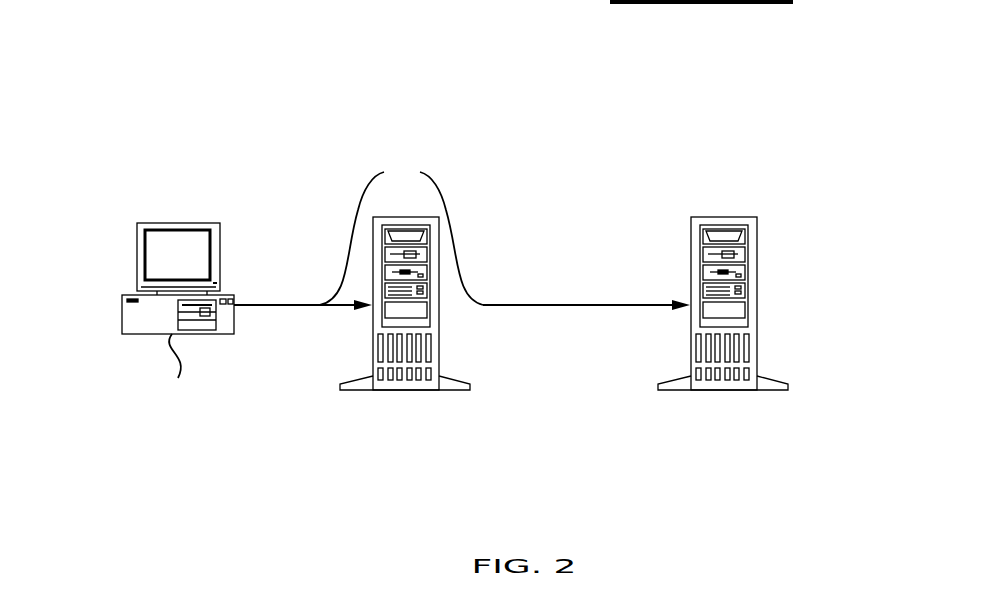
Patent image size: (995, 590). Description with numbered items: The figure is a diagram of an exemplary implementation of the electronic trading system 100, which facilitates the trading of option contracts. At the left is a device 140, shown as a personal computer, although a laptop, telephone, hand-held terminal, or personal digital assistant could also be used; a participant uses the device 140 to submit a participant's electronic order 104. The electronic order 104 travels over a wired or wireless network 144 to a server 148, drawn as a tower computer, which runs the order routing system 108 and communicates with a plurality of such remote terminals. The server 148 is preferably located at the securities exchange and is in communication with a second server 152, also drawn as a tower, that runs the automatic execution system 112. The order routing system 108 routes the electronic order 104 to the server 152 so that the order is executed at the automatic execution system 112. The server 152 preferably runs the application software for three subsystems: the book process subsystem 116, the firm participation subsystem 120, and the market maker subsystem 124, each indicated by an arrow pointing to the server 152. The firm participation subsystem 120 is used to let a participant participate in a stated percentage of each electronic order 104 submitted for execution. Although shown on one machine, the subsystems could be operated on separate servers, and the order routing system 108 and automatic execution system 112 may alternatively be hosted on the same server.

The electronic trading system 100 is at (282, 68).
The participant's electronic order 104 is at (400, 205).
The order routing system 108 is at (423, 375).
The automatic execution system 112 is at (709, 293).
The book process subsystem 116 is at (722, 203).
The firm participation subsystem 120 is at (680, 245).
The market maker subsystem 124 is at (848, 204).
The device 140 is at (165, 317).
The wired or wireless network 144 is at (292, 340).
The server 148 is at (440, 342).
The server 152 is at (757, 355).